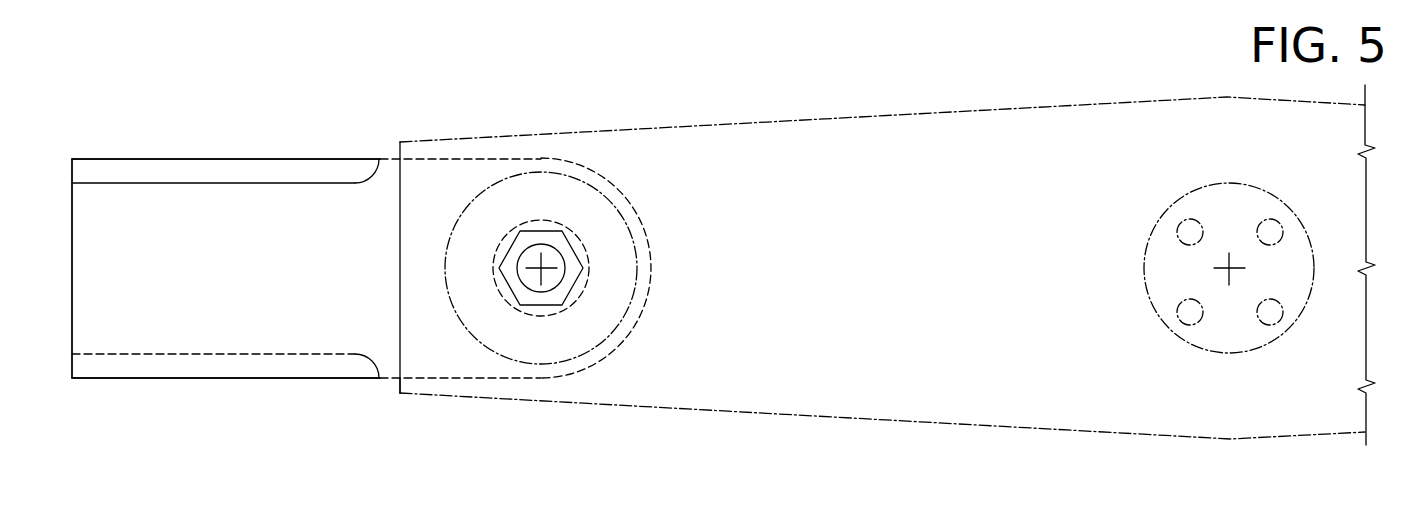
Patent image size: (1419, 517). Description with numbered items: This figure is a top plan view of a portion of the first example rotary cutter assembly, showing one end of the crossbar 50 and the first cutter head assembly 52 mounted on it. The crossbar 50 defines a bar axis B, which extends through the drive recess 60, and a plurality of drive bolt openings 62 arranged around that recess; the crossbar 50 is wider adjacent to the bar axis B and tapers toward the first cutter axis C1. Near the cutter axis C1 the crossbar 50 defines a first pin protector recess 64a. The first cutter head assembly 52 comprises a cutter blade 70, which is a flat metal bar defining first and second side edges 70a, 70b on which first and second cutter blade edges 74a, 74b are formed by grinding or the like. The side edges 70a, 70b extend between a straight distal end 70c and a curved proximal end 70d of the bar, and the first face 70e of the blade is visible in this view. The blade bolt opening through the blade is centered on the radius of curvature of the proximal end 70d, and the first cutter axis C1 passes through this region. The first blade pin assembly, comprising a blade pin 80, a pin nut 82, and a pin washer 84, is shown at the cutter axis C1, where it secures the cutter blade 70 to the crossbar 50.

The crossbar 50 is at (910, 150).
The first cutter head assembly 52 is at (239, 426).
The drive recess 60 is at (1170, 277).
The drive bolt openings 62 is at (1265, 232).
The first pin protector recess 64a is at (597, 187).
The cutter blade 70 is at (252, 213).
The first side edge 70a is at (387, 160).
The second side edge 70b is at (400, 378).
The straight distal end 70c is at (70, 208).
The curved proximal end 70d is at (628, 197).
The first face 70e is at (243, 287).
The first cutter blade edge 74a is at (185, 157).
The second cutter blade edge 74b is at (152, 378).
The blade pin 80 is at (557, 275).
The pin nut 82 is at (567, 283).
The pin washer 84 is at (547, 312).
The first cutter axis C1 is at (545, 266).
The bar axis B is at (1228, 268).